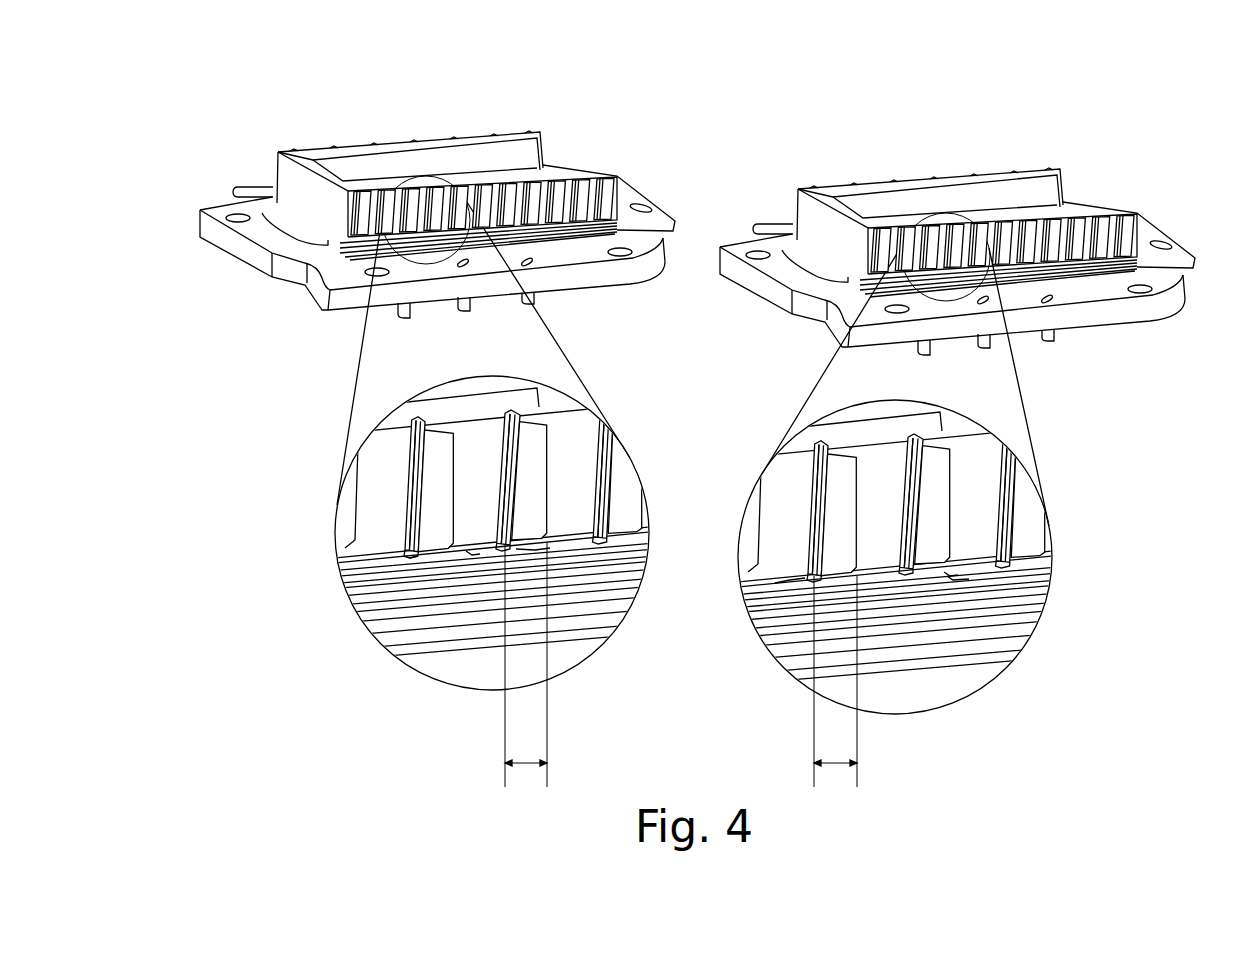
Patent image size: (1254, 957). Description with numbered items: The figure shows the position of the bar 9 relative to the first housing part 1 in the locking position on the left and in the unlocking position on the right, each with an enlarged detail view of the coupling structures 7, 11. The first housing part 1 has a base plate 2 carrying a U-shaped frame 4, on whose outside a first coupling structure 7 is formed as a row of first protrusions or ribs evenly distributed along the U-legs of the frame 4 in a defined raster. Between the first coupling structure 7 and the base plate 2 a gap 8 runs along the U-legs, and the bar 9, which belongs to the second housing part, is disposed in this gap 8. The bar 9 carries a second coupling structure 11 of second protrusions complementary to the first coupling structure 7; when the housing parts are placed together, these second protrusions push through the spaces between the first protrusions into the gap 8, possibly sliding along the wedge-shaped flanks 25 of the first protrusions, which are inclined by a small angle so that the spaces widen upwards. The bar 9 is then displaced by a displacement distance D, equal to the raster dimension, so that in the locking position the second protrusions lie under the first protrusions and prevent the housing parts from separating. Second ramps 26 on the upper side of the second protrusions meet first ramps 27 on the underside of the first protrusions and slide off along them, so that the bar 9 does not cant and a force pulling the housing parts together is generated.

The first housing part 1 is at (667, 438).
The base plate 2 is at (620, 272).
The U-shaped frame 4 is at (290, 187).
The first coupling structure 7 is at (530, 490).
The gap 8 is at (487, 548).
The bar 9 is at (647, 203).
The second coupling structure 11 is at (535, 550).
The flanks 25 is at (403, 498).
The second ramps 26 is at (412, 560).
The first ramps 27 is at (472, 552).
The displacement distance D is at (681, 674).